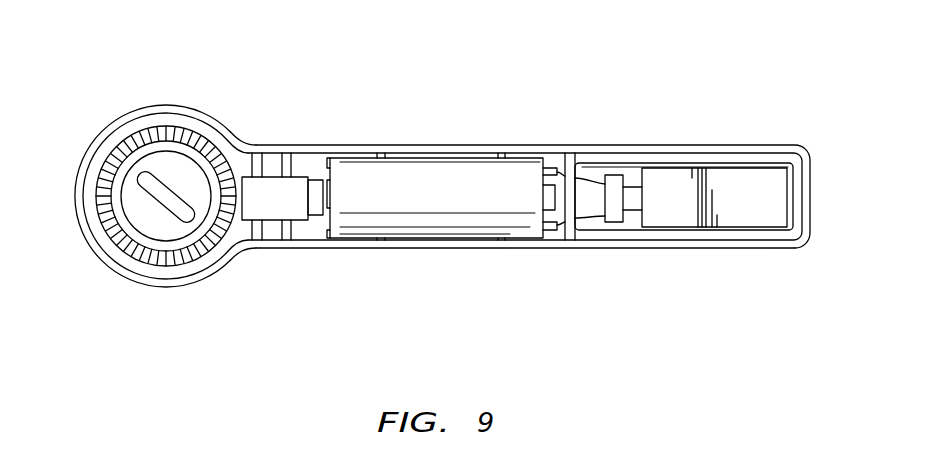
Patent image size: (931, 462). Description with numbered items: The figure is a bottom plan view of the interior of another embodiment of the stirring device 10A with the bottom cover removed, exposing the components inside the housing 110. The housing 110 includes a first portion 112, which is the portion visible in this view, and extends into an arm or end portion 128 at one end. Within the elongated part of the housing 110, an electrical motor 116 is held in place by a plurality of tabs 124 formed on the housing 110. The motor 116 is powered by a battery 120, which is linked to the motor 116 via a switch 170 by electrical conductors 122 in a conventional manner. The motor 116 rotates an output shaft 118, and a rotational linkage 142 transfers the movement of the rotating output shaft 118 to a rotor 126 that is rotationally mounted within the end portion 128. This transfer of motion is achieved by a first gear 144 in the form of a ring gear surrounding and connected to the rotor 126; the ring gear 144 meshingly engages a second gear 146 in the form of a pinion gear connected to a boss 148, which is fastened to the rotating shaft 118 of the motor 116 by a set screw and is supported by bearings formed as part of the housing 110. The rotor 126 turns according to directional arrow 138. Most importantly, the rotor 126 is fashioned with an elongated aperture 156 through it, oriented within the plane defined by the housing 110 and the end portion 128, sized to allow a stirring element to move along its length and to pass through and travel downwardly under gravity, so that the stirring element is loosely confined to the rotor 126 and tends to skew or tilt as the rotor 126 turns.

The stirring device 10A is at (562, 120).
The housing 110 is at (226, 272).
The first portion 112 is at (237, 131).
The electrical motor 116 is at (470, 180).
The output shaft 118 is at (330, 192).
The battery 120 is at (660, 182).
The electrical conductors 122 is at (592, 187).
The tabs 124 is at (383, 256).
The rotor 126 is at (160, 162).
The end portion 128 is at (148, 286).
The directional arrow 138 is at (80, 83).
The rotational linkage 142 is at (219, 126).
The first gear 144 is at (115, 245).
The second gear 146 is at (238, 250).
The boss 148 is at (282, 192).
The aperture 156 is at (178, 203).
The switch 170 is at (810, 168).